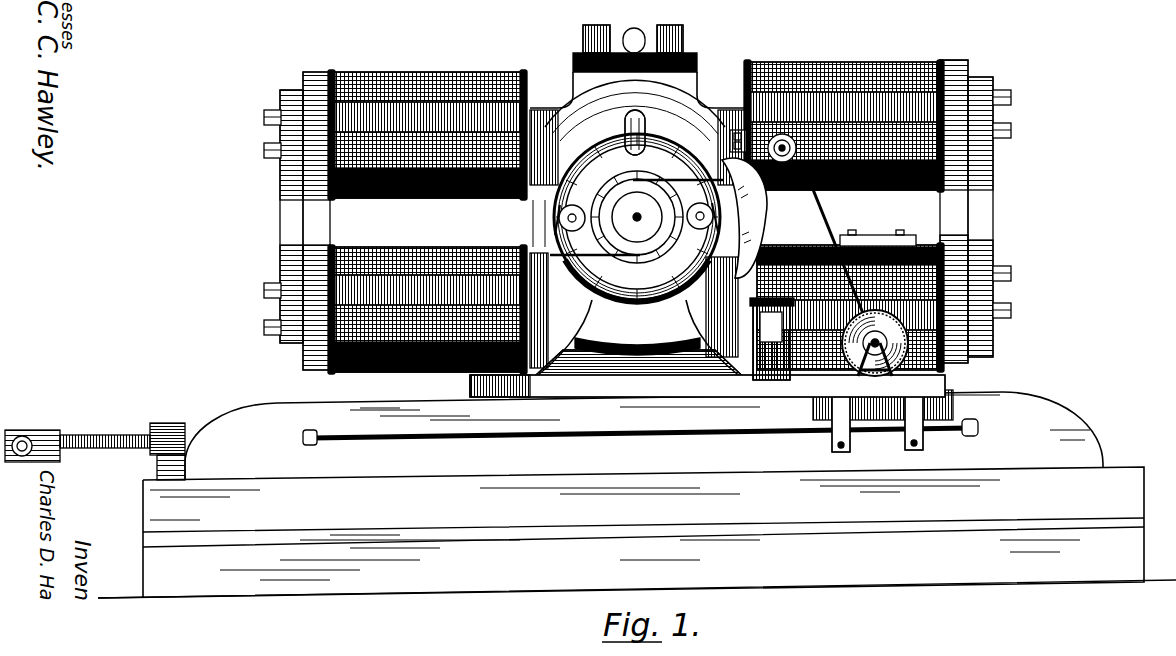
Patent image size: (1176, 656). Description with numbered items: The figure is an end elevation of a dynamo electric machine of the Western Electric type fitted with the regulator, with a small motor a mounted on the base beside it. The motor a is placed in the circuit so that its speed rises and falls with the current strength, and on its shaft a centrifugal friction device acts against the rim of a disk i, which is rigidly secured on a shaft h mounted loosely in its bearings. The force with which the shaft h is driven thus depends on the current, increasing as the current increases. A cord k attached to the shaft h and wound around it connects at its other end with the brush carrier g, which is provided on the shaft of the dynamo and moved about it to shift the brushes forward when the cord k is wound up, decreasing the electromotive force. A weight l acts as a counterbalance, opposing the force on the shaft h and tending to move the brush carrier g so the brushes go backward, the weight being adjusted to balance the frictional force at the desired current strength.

The brush carrier g is at (744, 218).
The cord k is at (837, 265).
The motor a is at (876, 236).
The weight l is at (772, 339).
The disk i is at (875, 343).
The shaft h is at (877, 345).